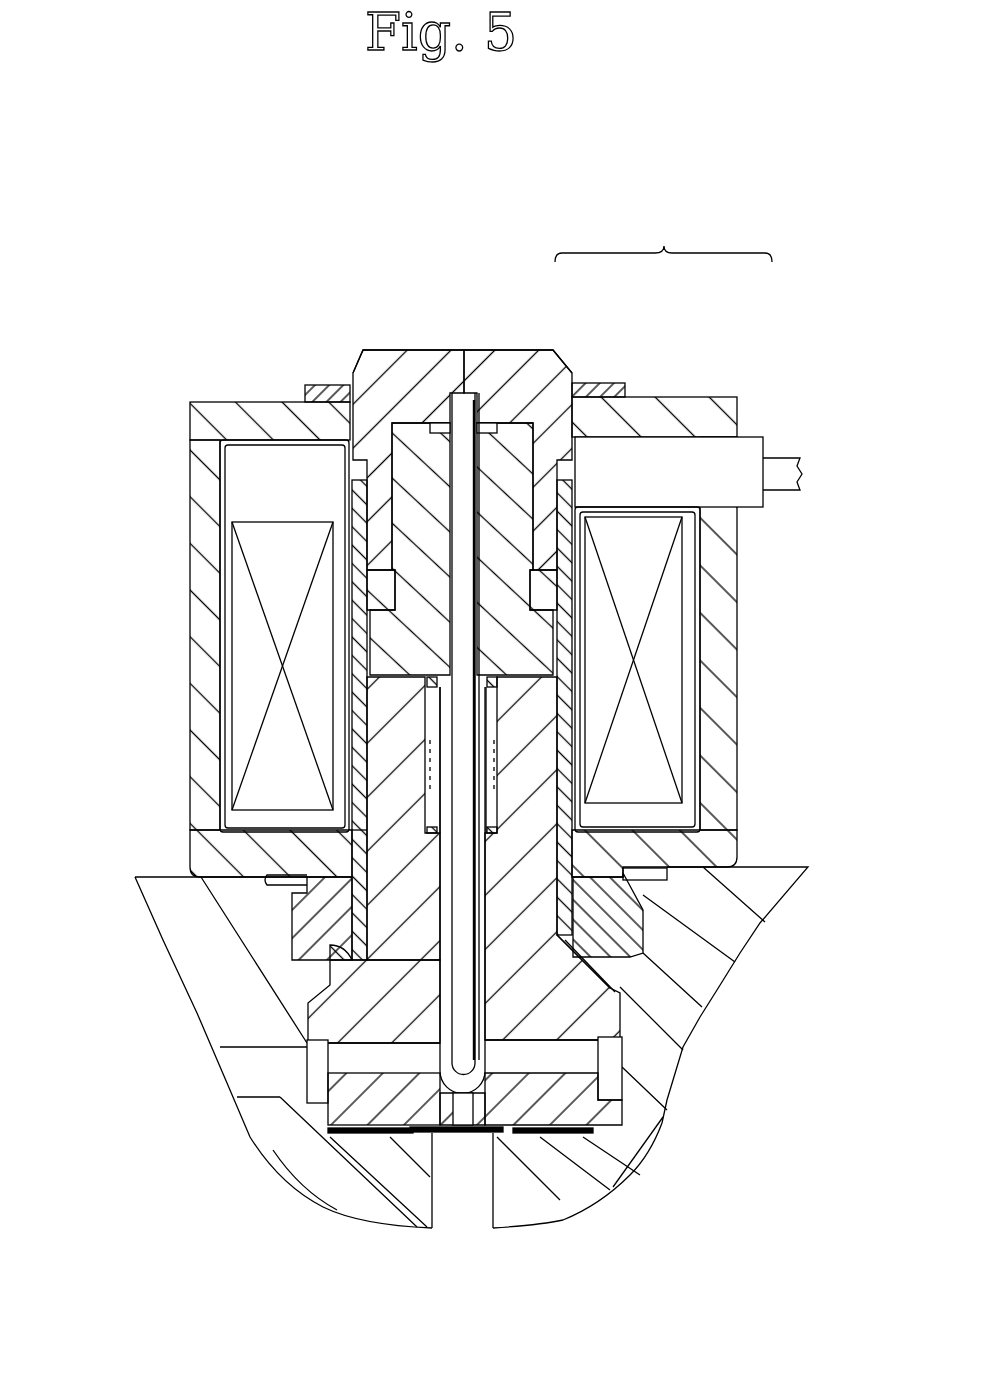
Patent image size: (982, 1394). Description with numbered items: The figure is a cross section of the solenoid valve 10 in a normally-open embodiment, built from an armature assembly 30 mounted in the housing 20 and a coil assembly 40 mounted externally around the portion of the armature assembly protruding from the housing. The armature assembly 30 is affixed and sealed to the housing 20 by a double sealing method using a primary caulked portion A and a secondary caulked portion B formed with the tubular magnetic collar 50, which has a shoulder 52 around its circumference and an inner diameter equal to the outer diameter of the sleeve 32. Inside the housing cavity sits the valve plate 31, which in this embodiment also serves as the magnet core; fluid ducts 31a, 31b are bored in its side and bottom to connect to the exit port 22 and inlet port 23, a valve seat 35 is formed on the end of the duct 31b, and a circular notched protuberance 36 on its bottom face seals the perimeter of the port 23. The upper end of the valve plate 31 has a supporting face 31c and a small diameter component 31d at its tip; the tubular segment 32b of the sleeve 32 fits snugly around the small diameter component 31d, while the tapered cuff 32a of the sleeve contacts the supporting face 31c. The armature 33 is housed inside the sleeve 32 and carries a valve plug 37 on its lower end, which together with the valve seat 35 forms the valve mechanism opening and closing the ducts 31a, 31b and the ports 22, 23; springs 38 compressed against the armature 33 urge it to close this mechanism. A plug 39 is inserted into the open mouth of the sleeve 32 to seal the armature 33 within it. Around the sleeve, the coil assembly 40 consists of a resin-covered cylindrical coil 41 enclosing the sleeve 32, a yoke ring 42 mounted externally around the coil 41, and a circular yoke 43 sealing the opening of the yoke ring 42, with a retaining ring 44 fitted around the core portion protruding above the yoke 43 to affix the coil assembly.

The solenoid valve 10 is at (663, 236).
The housing 20 is at (148, 872).
The exit port 22 is at (240, 1078).
The inlet port 23 is at (450, 1215).
The armature assembly 30 is at (555, 350).
The valve plate 31 is at (307, 1027).
The fluid duct 31a is at (350, 1067).
The fluid duct 31b is at (470, 1120).
The supporting face 31c is at (622, 990).
The small diameter component 31d is at (375, 737).
The sleeve 32 is at (352, 605).
The tapered cuff 32a is at (307, 977).
The tubular segment 32b is at (320, 833).
The armature 33 is at (417, 458).
The valve seat 35 is at (465, 1112).
The notched protuberance 36 is at (460, 1117).
The valve plug 37 is at (470, 1020).
The springs 38 is at (505, 782).
The plug 39 is at (495, 350).
The coil assembly 40 is at (725, 396).
The coil 41 is at (670, 598).
The yoke ring 42 is at (740, 657).
The yoke 43 is at (243, 402).
The retaining ring 44 is at (323, 385).
The collar 50 is at (295, 932).
The shoulder 52 is at (285, 885).
The primary caulked portion A is at (618, 970).
The secondary caulked portion B is at (645, 893).